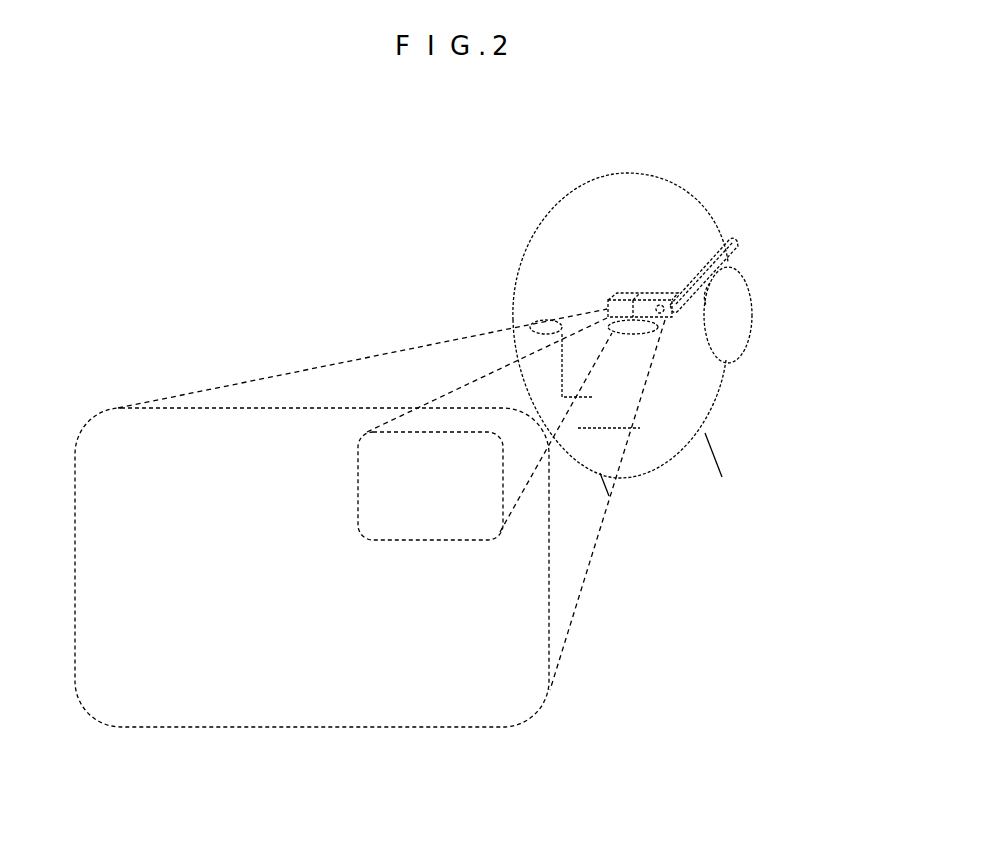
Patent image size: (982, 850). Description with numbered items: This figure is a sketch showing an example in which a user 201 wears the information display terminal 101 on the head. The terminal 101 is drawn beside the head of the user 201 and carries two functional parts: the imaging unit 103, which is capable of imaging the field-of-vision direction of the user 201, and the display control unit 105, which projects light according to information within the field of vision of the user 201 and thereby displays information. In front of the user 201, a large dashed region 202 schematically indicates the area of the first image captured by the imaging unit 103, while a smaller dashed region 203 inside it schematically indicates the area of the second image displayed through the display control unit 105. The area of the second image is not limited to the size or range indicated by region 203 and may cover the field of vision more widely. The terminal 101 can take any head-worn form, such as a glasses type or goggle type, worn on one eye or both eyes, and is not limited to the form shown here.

The information display terminal 101 is at (740, 242).
The imaging unit 103 is at (752, 313).
The display control unit 105 is at (622, 308).
The user 201 is at (718, 413).
The area of first image 202 is at (498, 728).
The area of second image 203 is at (440, 540).